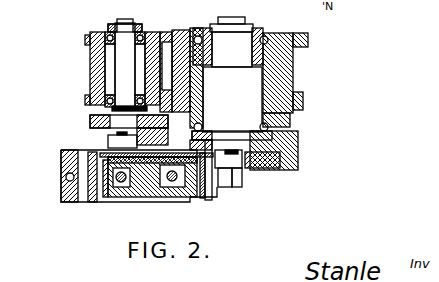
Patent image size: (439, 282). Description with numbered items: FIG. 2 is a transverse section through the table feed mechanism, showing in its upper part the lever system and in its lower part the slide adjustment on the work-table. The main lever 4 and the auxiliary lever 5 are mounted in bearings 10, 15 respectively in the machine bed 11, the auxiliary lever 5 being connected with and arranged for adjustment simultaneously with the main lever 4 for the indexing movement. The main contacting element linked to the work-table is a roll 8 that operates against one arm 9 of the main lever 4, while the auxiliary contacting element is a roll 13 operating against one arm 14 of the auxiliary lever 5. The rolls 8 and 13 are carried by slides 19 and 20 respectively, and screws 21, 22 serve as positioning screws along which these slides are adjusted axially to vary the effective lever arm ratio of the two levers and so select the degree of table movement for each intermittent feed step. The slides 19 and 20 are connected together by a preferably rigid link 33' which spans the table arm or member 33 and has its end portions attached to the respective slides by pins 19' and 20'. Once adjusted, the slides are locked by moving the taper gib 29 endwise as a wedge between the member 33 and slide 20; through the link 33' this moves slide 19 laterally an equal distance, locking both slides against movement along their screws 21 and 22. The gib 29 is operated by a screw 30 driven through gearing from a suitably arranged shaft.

The main lever 4 is at (300, 150).
The auxiliary lever 5 is at (95, 118).
The roll 8 is at (232, 160).
The arm of the main lever 9 is at (270, 168).
The bearing 10 is at (230, 74).
The machine bed 11 is at (300, 46).
The roll 13 is at (110, 142).
The arm of the auxiliary lever 14 is at (163, 136).
The bearing 15 is at (125, 62).
The slide 19 is at (218, 191).
The pin 19' is at (221, 195).
The slide 20 is at (132, 190).
The pin 20' is at (69, 215).
The screw 21 is at (170, 190).
The screw 22 is at (62, 172).
The taper gib 29 is at (103, 203).
The screw 30 is at (122, 190).
The table arm or member 33 is at (152, 197).
The rigid link 33' is at (142, 215).